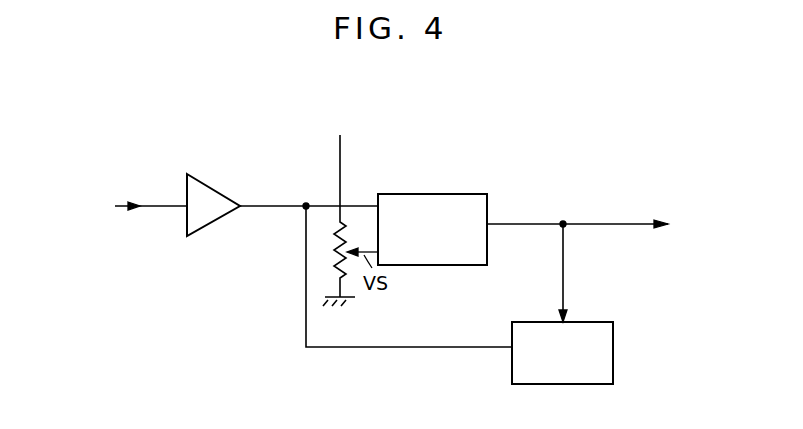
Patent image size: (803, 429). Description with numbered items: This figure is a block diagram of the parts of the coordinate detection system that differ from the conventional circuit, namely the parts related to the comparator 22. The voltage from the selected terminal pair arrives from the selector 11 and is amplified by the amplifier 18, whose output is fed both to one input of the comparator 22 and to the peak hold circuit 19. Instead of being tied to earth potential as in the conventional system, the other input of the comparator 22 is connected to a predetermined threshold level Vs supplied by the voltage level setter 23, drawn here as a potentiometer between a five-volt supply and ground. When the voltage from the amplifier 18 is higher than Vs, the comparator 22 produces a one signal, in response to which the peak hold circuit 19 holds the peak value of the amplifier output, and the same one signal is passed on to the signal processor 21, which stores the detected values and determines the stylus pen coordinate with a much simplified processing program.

The selector 11 is at (106, 211).
The amplifier 18 is at (220, 191).
The comparator 22 is at (443, 194).
The voltage level setter 23 is at (342, 287).
The peak hold circuit 19 is at (594, 322).
The signal processor 21 is at (617, 232).